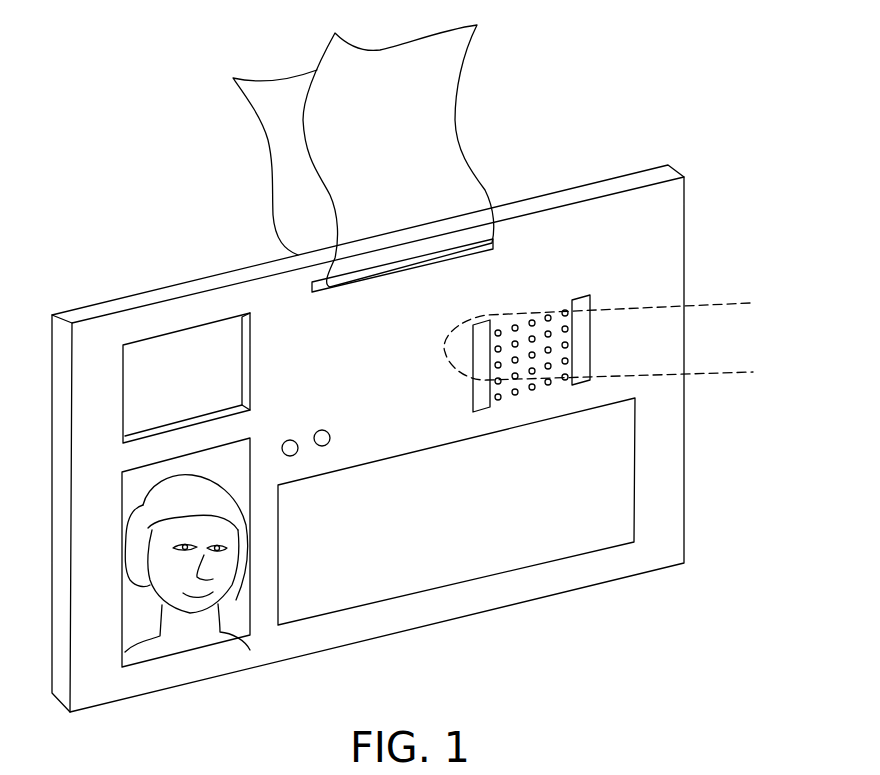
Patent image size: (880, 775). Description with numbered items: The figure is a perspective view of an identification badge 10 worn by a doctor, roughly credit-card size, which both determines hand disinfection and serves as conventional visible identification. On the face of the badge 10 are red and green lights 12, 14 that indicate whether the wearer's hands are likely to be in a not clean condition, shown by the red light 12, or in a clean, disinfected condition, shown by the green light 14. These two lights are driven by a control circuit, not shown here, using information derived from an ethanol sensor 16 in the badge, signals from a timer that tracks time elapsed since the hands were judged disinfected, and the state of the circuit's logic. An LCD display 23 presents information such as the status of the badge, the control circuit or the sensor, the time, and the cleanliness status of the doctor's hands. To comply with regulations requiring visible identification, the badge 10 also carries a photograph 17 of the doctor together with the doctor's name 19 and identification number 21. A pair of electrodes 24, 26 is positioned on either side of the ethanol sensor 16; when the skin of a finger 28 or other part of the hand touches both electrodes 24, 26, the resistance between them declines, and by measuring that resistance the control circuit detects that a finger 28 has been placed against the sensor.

The identification badge 10 is at (687, 232).
The red light 12 is at (288, 437).
The green light 14 is at (332, 436).
The ethanol sensor 16 is at (534, 331).
The photograph 17 is at (118, 575).
The doctor's name 19 is at (627, 412).
The identification number 21 is at (370, 535).
The LCD display 23 is at (223, 352).
The electrode 24 is at (473, 407).
The electrode 26 is at (592, 330).
The finger 28 is at (642, 303).